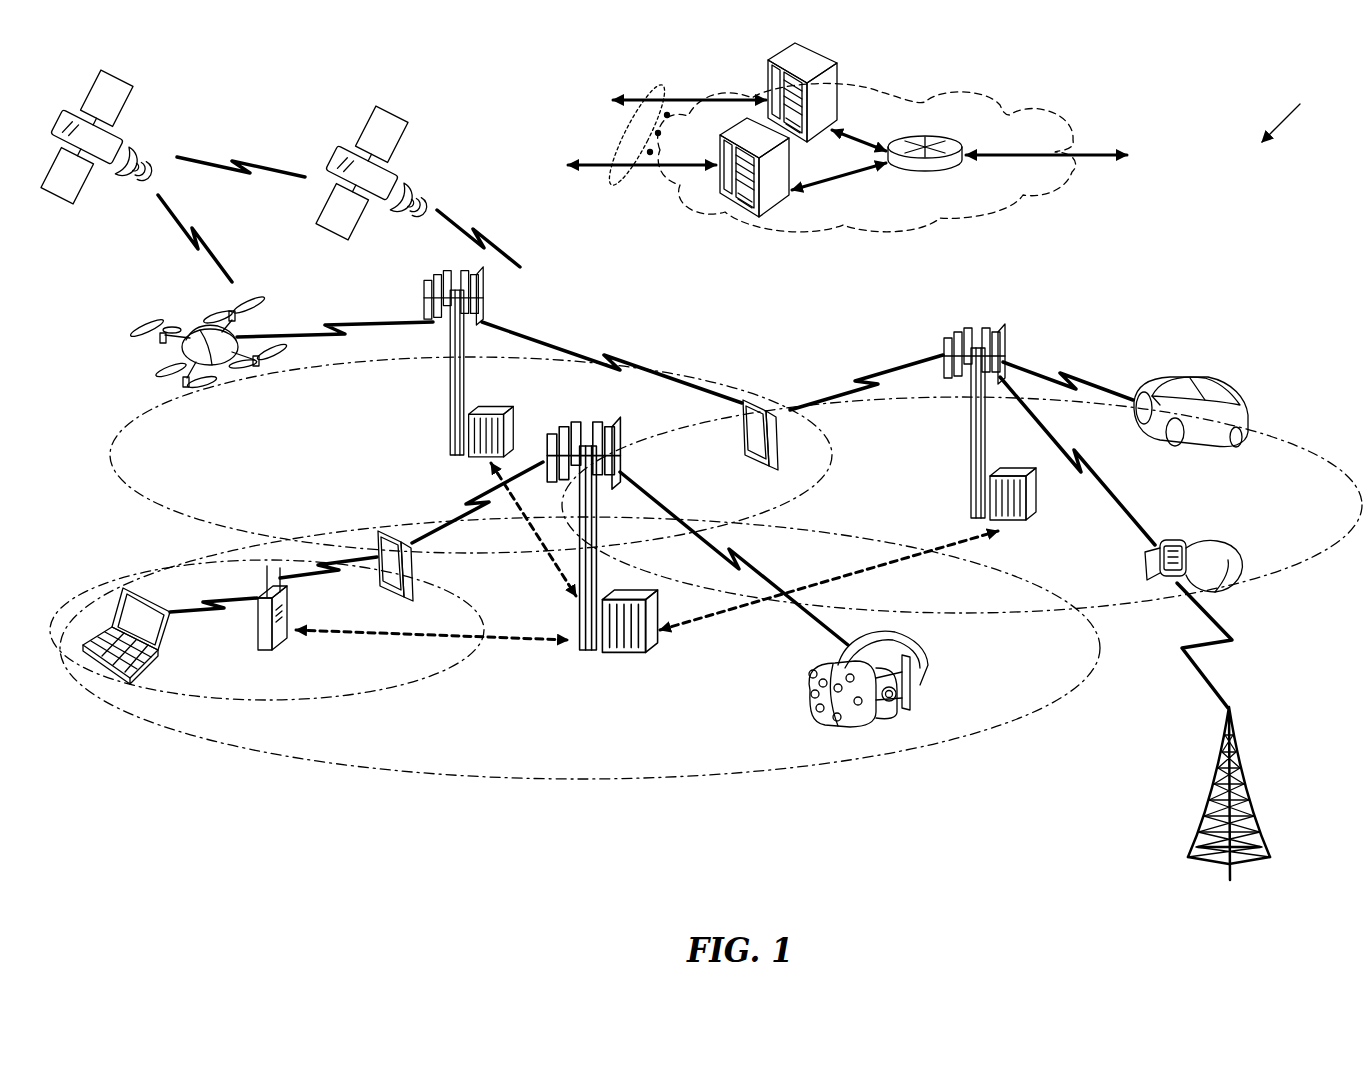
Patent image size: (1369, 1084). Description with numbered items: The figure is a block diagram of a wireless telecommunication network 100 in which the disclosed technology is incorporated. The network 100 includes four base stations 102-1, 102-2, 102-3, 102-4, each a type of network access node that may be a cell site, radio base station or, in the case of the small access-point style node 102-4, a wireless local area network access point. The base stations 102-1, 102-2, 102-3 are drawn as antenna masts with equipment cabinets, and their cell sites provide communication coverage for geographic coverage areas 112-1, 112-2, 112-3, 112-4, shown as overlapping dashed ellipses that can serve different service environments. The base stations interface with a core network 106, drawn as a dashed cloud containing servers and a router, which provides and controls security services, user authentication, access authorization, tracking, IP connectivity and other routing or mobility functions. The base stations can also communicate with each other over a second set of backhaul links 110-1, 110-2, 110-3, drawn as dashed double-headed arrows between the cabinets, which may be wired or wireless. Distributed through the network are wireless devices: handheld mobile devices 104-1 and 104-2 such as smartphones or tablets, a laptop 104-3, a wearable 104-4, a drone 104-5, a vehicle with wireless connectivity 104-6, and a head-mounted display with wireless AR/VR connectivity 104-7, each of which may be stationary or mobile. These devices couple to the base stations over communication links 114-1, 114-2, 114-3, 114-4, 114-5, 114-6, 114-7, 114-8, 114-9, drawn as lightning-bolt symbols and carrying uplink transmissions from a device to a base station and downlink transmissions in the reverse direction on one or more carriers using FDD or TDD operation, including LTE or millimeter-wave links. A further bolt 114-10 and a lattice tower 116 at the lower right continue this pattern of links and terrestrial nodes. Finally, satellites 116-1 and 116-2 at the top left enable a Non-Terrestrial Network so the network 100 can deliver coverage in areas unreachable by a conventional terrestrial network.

The wireless telecommunication network 100 is at (1289, 110).
The base station 102-1 is at (588, 650).
The base station 102-2 is at (448, 404).
The base station 102-3 is at (968, 437).
The base station 102-4 is at (260, 640).
The handheld mobile device 104-1 is at (410, 573).
The handheld mobile device 104-2 is at (742, 434).
The laptop 104-3 is at (107, 668).
The wearable 104-4 is at (1173, 535).
The drone 104-5 is at (218, 370).
The vehicle with wireless connectivity 104-6 is at (1212, 396).
The head-mounted display with wireless AR/VR connectivity 104-7 is at (918, 664).
The core network 106 is at (960, 217).
The backhaul link 110-1 is at (327, 632).
The backhaul link 110-2 is at (890, 560).
The backhaul link 110-3 is at (547, 558).
The coverage area 112-1 is at (516, 780).
The coverage area 112-2 is at (393, 690).
The coverage area 112-3 is at (162, 516).
The coverage area 112-4 is at (1250, 437).
The communication link 114-1 is at (750, 568).
The communication link 114-2 is at (482, 500).
The communication link 114-3 is at (183, 610).
The communication link 114-4 is at (323, 577).
The communication link 114-5 is at (345, 320).
The communication link 114-6 is at (860, 378).
The communication link 114-7 is at (617, 362).
The communication link 114-8 is at (1095, 483).
The communication link 114-9 is at (1062, 366).
The wireless link 114-10 is at (1227, 644).
The broadcast tower 116 is at (1245, 776).
The satellite 116-1 is at (142, 143).
The satellite 116-2 is at (405, 188).